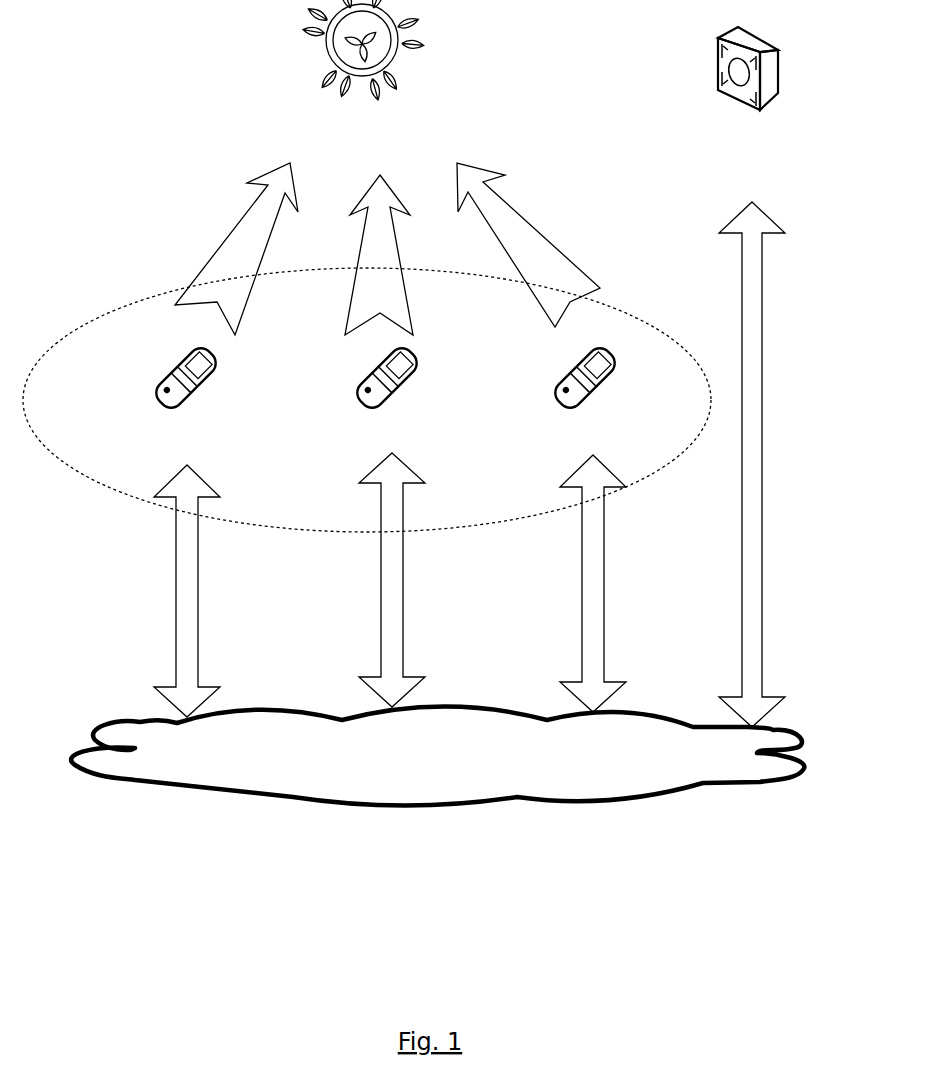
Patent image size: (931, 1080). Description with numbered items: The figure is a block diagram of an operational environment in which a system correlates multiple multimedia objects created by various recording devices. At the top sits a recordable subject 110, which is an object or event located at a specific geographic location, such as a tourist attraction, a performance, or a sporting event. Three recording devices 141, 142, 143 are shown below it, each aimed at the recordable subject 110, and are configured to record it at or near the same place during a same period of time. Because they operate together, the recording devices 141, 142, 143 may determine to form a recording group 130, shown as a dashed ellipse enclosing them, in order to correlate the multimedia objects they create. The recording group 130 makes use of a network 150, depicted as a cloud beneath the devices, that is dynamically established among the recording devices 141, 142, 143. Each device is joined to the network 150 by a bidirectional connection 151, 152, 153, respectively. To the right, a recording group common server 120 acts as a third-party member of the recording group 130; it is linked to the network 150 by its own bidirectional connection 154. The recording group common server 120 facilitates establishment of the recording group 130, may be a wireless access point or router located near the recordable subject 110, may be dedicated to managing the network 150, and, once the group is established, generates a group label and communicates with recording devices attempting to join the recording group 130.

The recordable subject 110 is at (363, 84).
The recording group common server 120 is at (748, 107).
The recording group 130 is at (367, 400).
The recording device 141 is at (187, 396).
The recording device 142 is at (387, 396).
The recording device 143 is at (585, 396).
The network 150 is at (437, 756).
The Connection between recording device 141 and network 151 is at (187, 591).
The Connection between recording device 142 and network 152 is at (392, 580).
The Connection between recording device 143 and network 153 is at (593, 583).
The Connection between common server and network 154 is at (752, 464).